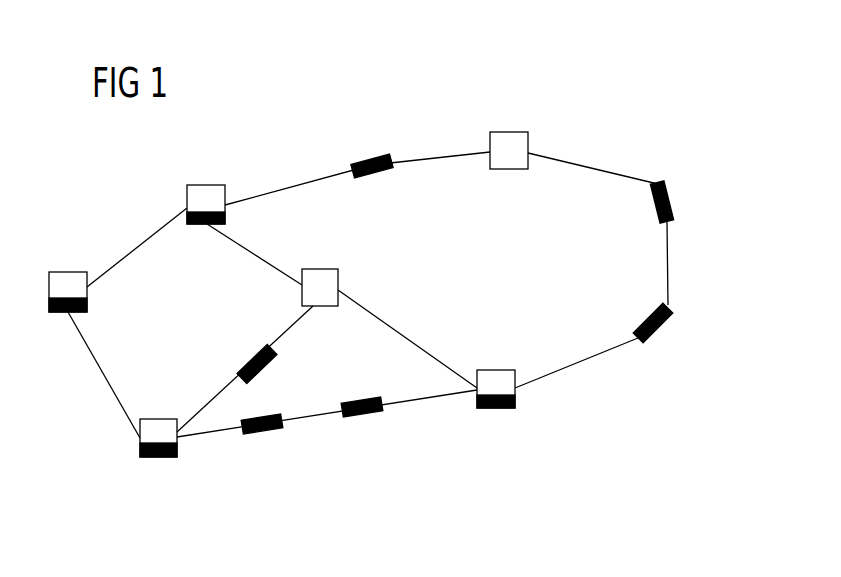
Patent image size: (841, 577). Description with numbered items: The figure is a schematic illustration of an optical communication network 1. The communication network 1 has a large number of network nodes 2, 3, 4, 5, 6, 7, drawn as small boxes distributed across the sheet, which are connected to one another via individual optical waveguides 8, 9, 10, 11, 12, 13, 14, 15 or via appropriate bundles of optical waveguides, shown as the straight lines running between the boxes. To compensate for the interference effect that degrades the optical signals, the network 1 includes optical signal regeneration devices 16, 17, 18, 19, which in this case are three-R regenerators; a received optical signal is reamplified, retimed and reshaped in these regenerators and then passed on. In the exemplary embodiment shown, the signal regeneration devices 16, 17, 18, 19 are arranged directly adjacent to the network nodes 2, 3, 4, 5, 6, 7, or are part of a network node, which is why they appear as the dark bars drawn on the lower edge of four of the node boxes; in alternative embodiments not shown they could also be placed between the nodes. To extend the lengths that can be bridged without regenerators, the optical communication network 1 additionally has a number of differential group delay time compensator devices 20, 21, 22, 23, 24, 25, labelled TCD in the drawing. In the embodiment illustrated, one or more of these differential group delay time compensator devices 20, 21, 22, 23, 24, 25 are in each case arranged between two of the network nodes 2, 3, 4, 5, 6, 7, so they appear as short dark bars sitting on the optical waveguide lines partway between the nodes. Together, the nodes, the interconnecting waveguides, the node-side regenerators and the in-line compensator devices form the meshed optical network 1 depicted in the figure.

The optical communication network 1 is at (418, 480).
The network node 2 is at (67, 270).
The network node 3 is at (162, 417).
The network node 4 is at (498, 368).
The network node 5 is at (324, 267).
The network node 6 is at (209, 183).
The network node 7 is at (511, 130).
The optical waveguide 8 is at (103, 374).
The optical waveguide 9 is at (145, 241).
The optical waveguide 10 is at (287, 187).
The optical waveguide 11 is at (253, 255).
The optical waveguide 12 is at (405, 335).
The optical waveguide 13 is at (597, 168).
The optical waveguide 14 is at (669, 262).
The optical waveguide 15 is at (581, 363).
The optical signal regeneration device 16 is at (60, 313).
The optical signal regeneration device 17 is at (155, 458).
The optical signal regeneration device 18 is at (195, 225).
The optical signal regeneration device 19 is at (495, 409).
The differential group delay time compensator device 20 is at (371, 155).
The differential group delay time compensator device 21 is at (674, 202).
The differential group delay time compensator device 22 is at (664, 331).
The differential group delay time compensator device 23 is at (365, 420).
The differential group delay time compensator device 24 is at (267, 436).
The differential group delay time compensator device 25 is at (274, 369).